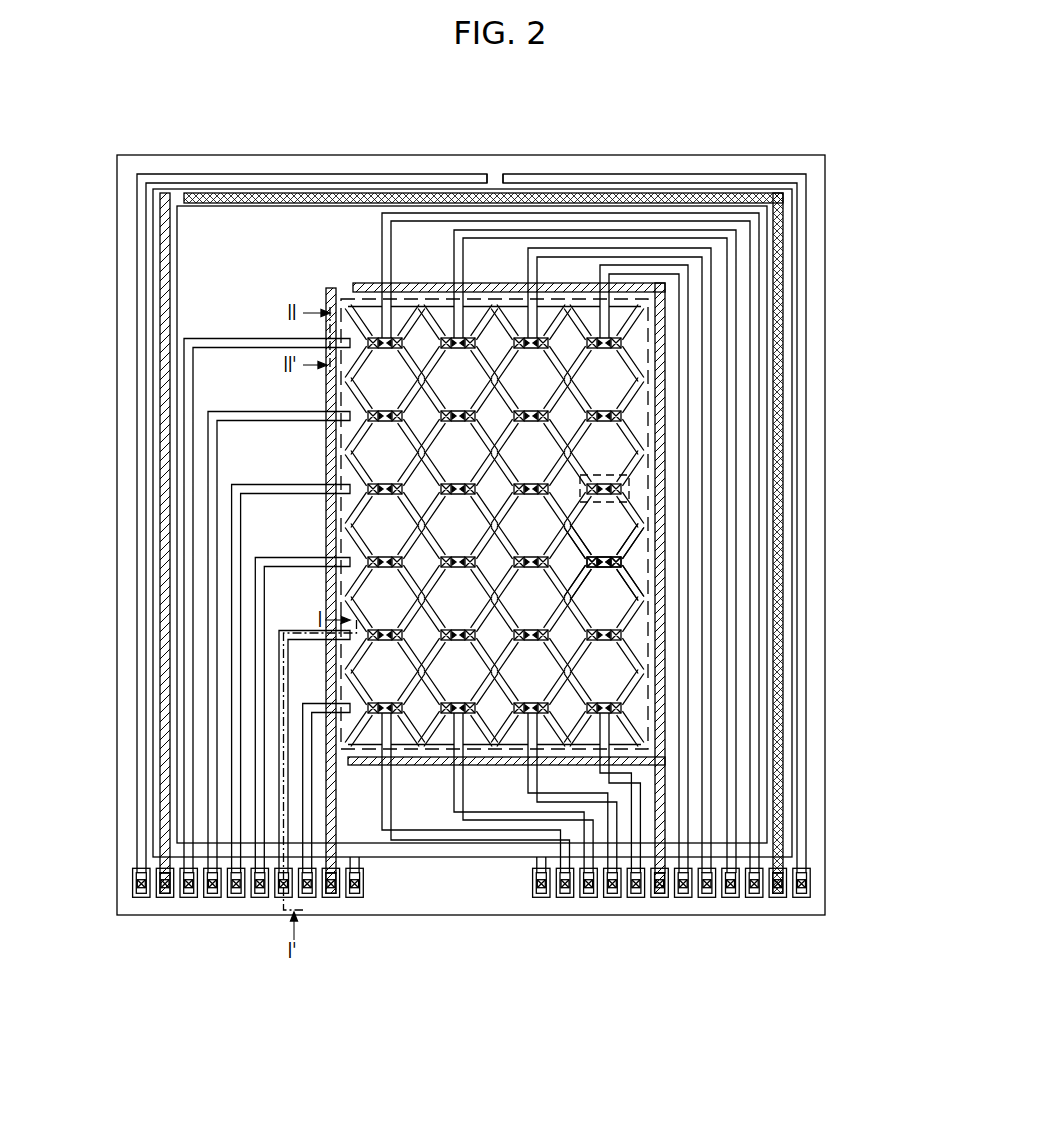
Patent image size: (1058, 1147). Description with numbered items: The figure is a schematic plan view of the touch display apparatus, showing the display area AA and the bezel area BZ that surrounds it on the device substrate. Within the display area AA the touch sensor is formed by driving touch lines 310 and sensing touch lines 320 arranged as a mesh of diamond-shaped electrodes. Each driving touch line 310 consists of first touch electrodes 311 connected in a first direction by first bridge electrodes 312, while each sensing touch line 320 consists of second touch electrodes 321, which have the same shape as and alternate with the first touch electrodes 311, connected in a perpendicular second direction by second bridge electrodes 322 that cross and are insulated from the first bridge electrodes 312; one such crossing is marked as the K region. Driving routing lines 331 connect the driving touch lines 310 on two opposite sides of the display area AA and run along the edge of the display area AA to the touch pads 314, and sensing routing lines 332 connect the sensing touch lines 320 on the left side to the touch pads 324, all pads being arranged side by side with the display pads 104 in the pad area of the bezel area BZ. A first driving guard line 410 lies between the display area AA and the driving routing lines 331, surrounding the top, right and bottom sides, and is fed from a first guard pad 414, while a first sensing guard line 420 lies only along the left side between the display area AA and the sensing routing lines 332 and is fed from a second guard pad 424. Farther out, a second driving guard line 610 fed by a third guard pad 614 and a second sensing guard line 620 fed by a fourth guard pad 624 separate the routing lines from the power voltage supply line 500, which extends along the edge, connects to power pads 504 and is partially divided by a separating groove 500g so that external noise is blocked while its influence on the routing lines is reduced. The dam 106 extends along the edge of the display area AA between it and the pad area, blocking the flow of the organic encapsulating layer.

The driving touch line 310 is at (494, 399).
The first touch electrode 311 is at (446, 312).
The first bridge electrode 312 is at (468, 325).
The sensing touch line 320 is at (752, 562).
The second touch electrode 321 is at (631, 557).
The second bridge electrode 322 is at (633, 568).
The driving routing line 331 is at (740, 657).
The sensing routing line 332 is at (229, 646).
The touch pad 314 is at (730, 902).
The touch pad 324 is at (236, 902).
The first driving guard line 410 is at (668, 782).
The first guard pad 414 is at (660, 902).
The first sensing guard line 420 is at (339, 822).
The second guard pad 424 is at (331, 902).
The power voltage supply line 500 is at (135, 293).
The separating groove 500g is at (495, 178).
The power pad 504 is at (141, 902).
The second driving guard line 610 is at (785, 272).
The third guard pad 614 is at (778, 902).
The second sensing guard line 620 is at (159, 427).
The fourth guard pad 624 is at (165, 902).
The display pad 104 is at (541, 902).
The dam 106 is at (679, 188).
The bezel area BZ is at (235, 240).
The display area AA is at (652, 386).
The K region K is at (632, 488).